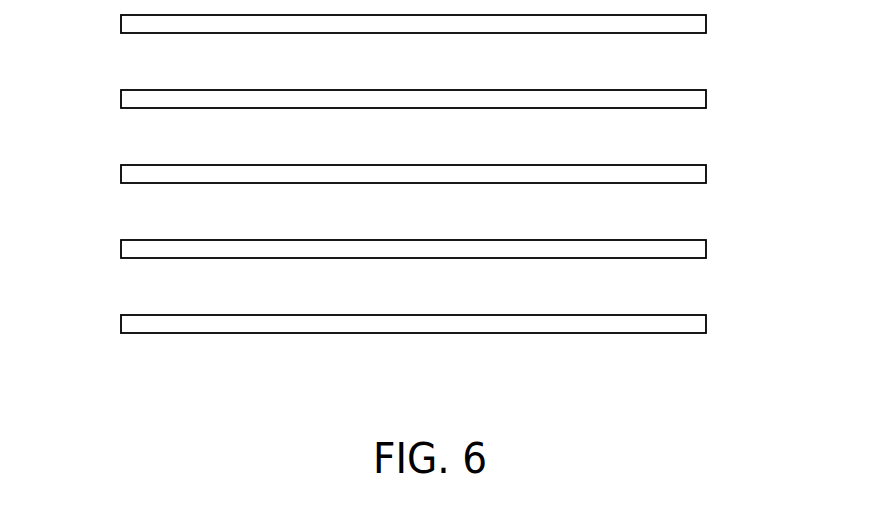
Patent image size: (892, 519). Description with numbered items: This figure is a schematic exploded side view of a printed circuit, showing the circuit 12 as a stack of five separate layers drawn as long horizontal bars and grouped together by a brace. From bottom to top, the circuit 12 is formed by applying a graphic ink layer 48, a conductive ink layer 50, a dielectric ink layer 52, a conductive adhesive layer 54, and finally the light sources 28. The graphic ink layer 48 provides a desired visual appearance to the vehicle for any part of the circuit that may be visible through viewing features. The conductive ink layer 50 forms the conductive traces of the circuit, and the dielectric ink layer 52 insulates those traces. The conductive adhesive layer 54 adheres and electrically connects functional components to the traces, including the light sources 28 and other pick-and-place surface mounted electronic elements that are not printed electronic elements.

The circuit 12 is at (433, 175).
The light sources 28 is at (121, 24).
The conductive adhesive layer 54 is at (121, 99).
The dielectric ink layer 52 is at (121, 174).
The conductive ink layer 50 is at (121, 249).
The graphic ink layer 48 is at (121, 324).